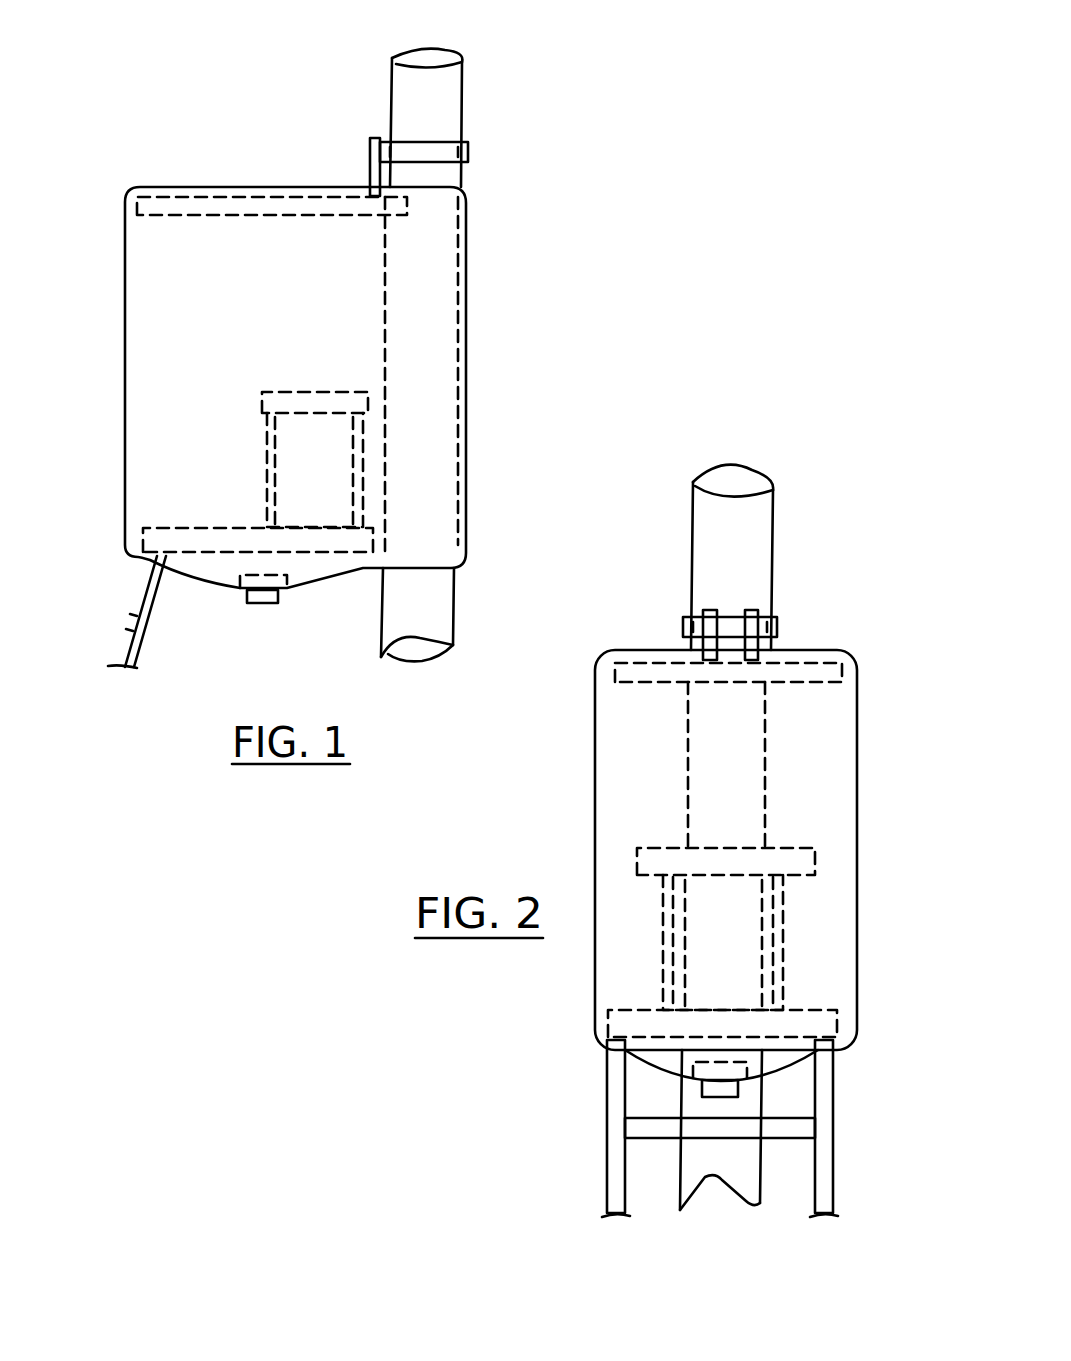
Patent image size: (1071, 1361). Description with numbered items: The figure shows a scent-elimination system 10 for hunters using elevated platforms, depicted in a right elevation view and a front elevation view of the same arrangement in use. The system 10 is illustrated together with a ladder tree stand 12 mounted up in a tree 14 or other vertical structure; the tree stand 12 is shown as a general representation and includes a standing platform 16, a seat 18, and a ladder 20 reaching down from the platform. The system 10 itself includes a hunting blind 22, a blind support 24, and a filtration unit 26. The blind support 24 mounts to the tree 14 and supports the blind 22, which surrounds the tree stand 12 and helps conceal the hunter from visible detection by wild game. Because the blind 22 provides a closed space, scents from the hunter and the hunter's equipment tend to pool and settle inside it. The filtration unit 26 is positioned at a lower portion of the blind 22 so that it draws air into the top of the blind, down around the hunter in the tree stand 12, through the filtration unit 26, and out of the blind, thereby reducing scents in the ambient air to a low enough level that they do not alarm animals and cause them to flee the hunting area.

In FIG. 1, the scent-elimination system 10 is at (103, 238).
In FIG. 2, the scent-elimination system 10 is at (861, 641).
In FIG. 1, the ladder tree stand 12 is at (255, 446).
In FIG. 2, the ladder tree stand 12 is at (820, 926).
In FIG. 1, the tree 14 is at (388, 77).
In FIG. 2, the tree 14 is at (778, 502).
In FIG. 1, the standing platform 16 is at (160, 527).
In FIG. 2, the standing platform 16 is at (820, 1007).
In FIG. 1, the seat 18 is at (292, 391).
In FIG. 2, the seat 18 is at (800, 843).
In FIG. 1, the ladder 20 is at (118, 646).
In FIG. 2, the ladder 20 is at (833, 1152).
In FIG. 1, the hunting blind 22 is at (184, 184).
In FIG. 2, the hunting blind 22 is at (594, 722).
In FIG. 1, the blind support 24 is at (249, 200).
In FIG. 2, the blind support 24 is at (650, 655).
In FIG. 1, the filtration unit 26 is at (257, 610).
In FIG. 2, the filtration unit 26 is at (698, 1094).